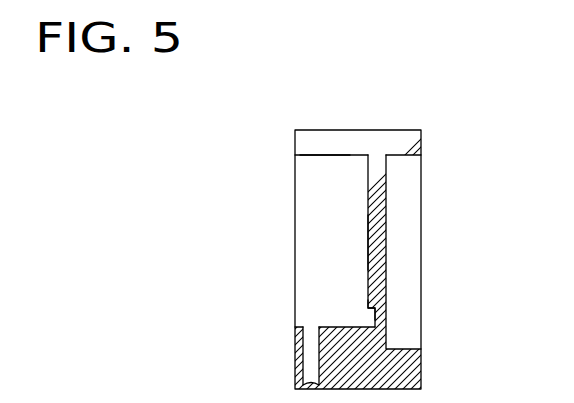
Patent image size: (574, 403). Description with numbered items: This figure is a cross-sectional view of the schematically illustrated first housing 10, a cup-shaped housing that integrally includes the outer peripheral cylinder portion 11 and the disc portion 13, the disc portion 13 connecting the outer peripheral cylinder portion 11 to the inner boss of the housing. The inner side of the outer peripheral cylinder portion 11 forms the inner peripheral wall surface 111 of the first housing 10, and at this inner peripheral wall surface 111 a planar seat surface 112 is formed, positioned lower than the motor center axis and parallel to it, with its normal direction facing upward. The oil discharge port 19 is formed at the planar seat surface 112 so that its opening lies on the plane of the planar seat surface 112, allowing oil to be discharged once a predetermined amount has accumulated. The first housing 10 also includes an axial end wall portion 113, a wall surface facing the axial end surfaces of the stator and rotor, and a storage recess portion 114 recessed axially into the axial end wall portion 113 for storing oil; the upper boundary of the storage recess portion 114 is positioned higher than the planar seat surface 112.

The first housing 10 is at (400, 130).
The outer peripheral cylinder portion 11 is at (305, 138).
The inner peripheral wall surface 111 is at (323, 155).
The disc portion 13 is at (380, 178).
The axial end wall portion 113 is at (368, 258).
The storage recess portion 114 is at (368, 309).
The planar seat surface 112 is at (332, 327).
The oil discharge port 19 is at (310, 327).